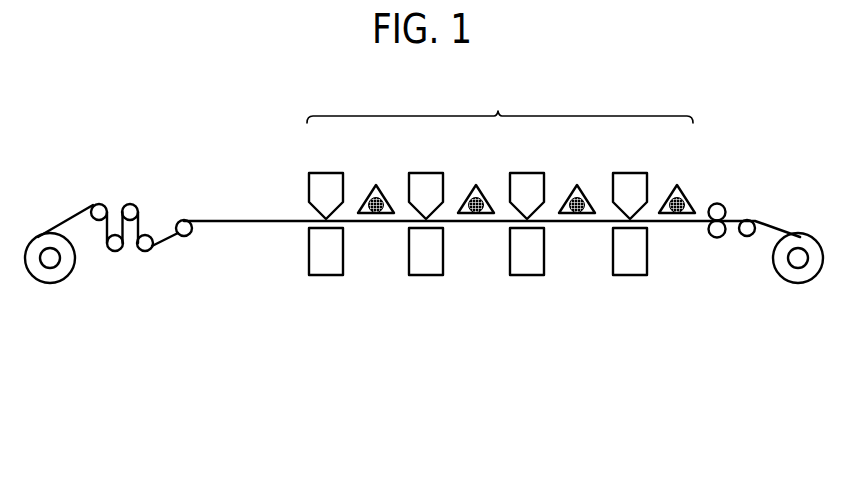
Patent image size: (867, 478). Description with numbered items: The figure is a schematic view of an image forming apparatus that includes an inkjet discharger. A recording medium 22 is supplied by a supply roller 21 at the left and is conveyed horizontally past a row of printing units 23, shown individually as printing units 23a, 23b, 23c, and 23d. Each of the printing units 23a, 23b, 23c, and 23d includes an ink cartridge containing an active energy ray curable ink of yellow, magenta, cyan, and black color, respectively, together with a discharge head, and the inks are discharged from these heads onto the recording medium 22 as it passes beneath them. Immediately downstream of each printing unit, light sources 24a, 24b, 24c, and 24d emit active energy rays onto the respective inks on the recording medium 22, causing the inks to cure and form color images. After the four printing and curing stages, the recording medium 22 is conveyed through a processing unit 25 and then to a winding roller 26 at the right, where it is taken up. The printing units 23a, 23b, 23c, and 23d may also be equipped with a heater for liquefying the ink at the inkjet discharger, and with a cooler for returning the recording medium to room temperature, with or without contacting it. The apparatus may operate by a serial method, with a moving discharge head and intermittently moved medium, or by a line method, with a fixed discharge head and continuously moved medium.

The supply roller 21 is at (50, 268).
The recording medium 22 is at (233, 218).
The printing units 23 is at (500, 181).
The printing unit 23a is at (327, 187).
The printing unit 23b is at (427, 187).
The printing unit 23c is at (528, 187).
The printing unit 23d is at (631, 187).
The light source 24a is at (376, 184).
The light source 24b is at (476, 184).
The light source 24c is at (577, 184).
The light source 24d is at (677, 184).
The processing unit 25 is at (721, 202).
The winding roller 26 is at (798, 268).